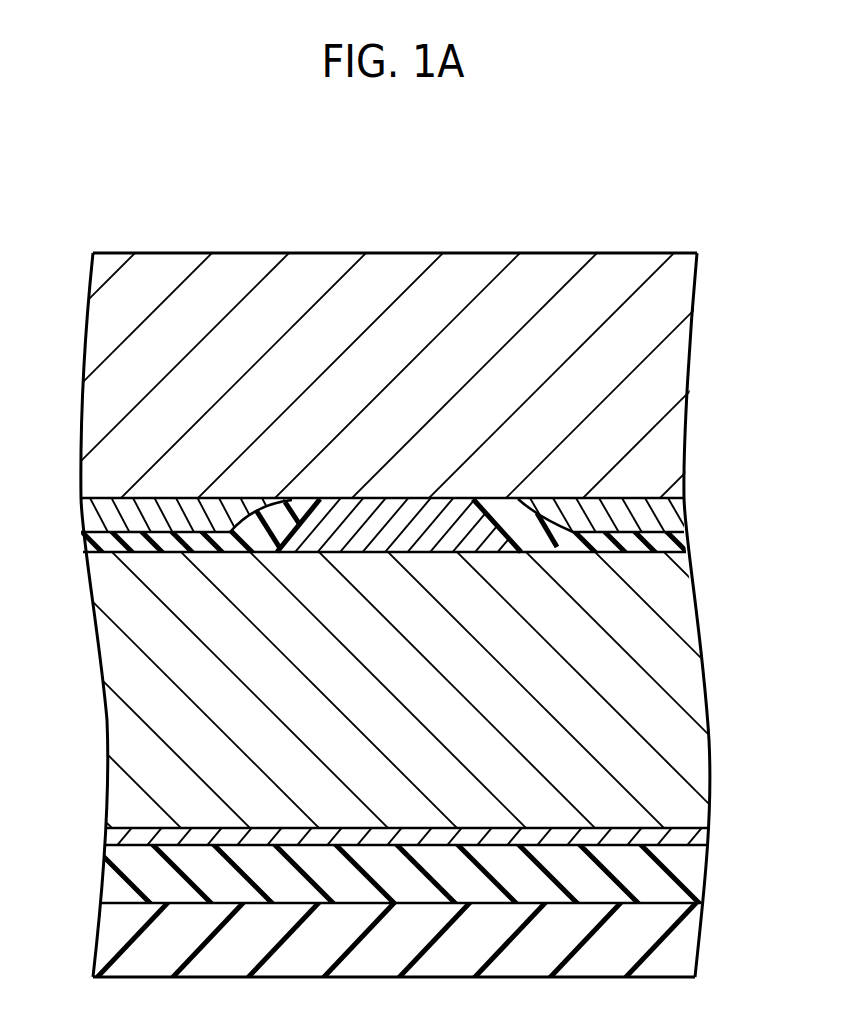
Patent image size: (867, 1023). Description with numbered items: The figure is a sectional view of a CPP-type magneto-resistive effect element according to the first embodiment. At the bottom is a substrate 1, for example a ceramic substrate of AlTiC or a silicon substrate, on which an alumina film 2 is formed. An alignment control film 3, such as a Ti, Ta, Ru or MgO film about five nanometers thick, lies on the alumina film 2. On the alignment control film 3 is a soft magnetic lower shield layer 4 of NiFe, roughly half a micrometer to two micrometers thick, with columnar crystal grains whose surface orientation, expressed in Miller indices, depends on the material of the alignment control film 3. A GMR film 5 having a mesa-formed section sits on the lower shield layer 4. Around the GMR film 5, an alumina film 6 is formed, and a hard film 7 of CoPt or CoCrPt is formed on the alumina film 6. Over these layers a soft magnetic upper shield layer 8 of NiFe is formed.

The substrate 1 is at (680, 938).
The alumina film 2 is at (688, 873).
The alignment control film 3 is at (692, 838).
The lower shield layer 4 is at (677, 685).
The GMR film 5 is at (405, 518).
The alumina film 6 is at (677, 540).
The hard film 7 is at (670, 517).
The upper shield layer 8 is at (657, 385).